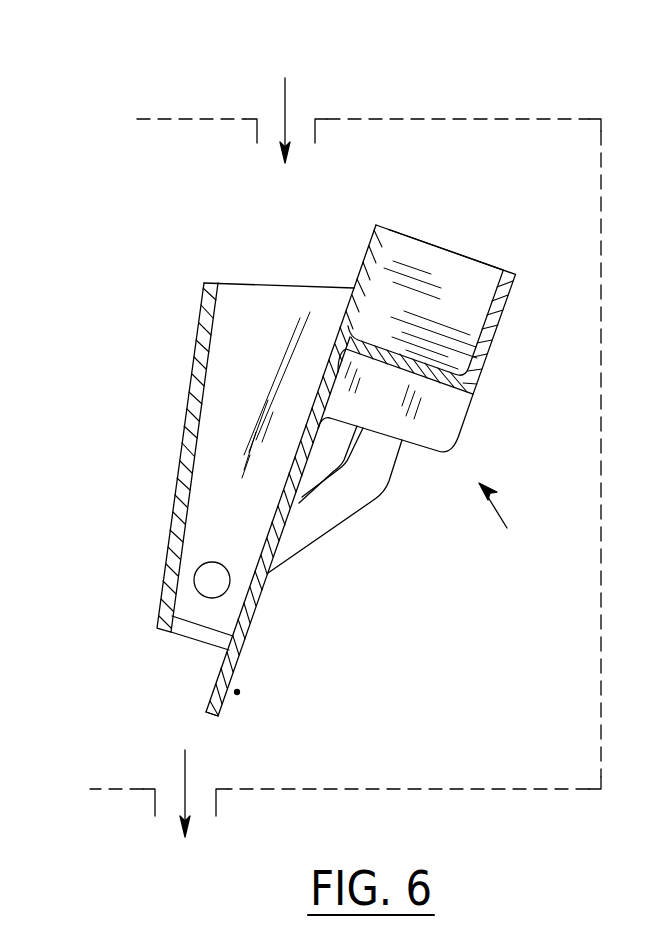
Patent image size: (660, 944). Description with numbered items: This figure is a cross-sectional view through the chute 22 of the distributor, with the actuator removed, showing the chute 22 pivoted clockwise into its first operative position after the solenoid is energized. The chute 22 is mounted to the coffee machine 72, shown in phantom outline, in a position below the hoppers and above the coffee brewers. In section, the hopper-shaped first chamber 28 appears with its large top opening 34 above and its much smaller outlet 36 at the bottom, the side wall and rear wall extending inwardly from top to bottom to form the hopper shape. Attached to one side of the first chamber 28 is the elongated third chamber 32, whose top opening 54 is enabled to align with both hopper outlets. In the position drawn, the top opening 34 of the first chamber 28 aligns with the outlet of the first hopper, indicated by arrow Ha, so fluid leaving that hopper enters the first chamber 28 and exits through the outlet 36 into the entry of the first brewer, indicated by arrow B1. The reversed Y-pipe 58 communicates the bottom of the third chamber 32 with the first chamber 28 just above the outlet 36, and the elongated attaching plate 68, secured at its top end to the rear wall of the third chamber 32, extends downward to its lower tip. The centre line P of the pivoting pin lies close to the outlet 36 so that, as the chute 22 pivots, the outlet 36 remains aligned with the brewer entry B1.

The chute 22 is at (514, 528).
The first chamber 28 is at (239, 465).
The third chamber 32 is at (465, 291).
The top opening 34 is at (271, 283).
The outlet 36 is at (183, 627).
The top opening 54 is at (458, 248).
The reversed Y-pipe 58 is at (369, 514).
The elongated attaching plate 68 is at (229, 706).
The coffee machine 72 is at (424, 118).
The outlet of the first hopper Ha is at (304, 104).
The entry of the first brewer B1 is at (201, 789).
The centre line of the pivoting pin P is at (237, 692).